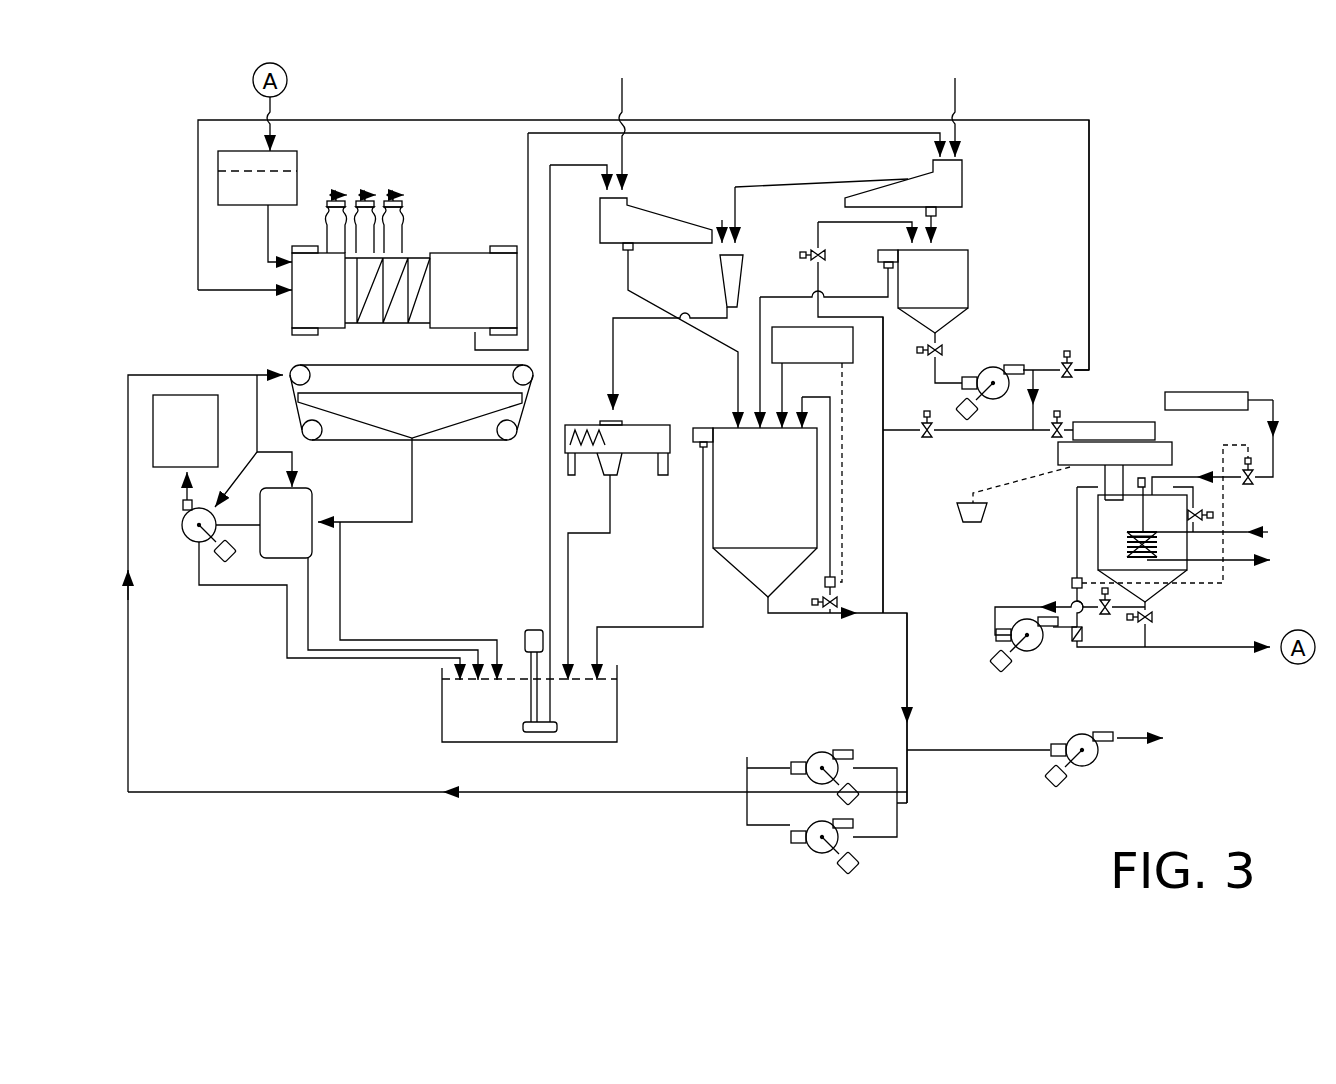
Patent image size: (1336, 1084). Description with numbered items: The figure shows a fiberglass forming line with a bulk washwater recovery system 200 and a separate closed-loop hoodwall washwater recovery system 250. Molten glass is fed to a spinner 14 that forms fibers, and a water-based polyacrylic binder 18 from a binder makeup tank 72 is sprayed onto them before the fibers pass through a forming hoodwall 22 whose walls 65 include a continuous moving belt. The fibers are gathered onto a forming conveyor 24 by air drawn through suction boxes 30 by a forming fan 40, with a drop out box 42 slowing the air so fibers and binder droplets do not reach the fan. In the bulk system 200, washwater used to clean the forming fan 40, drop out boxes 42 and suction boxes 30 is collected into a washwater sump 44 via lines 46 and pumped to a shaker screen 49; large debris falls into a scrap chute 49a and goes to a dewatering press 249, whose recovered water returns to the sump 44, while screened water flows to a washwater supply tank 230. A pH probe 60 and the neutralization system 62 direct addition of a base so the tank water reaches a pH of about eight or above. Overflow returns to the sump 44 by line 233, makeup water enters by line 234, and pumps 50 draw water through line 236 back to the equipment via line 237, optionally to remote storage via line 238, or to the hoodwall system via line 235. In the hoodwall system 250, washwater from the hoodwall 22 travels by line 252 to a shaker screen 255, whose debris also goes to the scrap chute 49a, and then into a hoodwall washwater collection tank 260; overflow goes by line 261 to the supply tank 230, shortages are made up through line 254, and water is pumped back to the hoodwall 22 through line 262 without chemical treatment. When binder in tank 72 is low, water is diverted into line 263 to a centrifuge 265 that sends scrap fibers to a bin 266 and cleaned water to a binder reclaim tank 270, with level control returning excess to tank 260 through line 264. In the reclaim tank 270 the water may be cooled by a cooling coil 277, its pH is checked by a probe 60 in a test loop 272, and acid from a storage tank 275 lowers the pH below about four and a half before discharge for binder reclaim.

The spinner 14 is at (405, 213).
The water-based polyacrylic binder 18 is at (237, 183).
The forming hoodwall 22 is at (312, 300).
The forming conveyor 24 is at (412, 363).
The suction boxes 30 is at (452, 415).
The forming fan 40 is at (188, 540).
The drop out box 42 is at (300, 508).
The washwater sump 44 is at (452, 710).
The input lines 46 is at (285, 625).
The shaker screen 49 is at (640, 205).
The scrap chute 49a is at (718, 283).
The pumps 50 is at (803, 837).
The pH probe 60 is at (825, 582).
The neutralization system 62 is at (797, 357).
The walls of the hoodwall 65 is at (515, 300).
The binder makeup tank 72 is at (297, 175).
The bulk washwater recovery system 200 is at (267, 832).
The washwater supply tank 230 is at (745, 502).
The overflow line 233 is at (702, 567).
The replenishment line 234 is at (612, 100).
The replenishment line 235 is at (883, 560).
The supply line 236 is at (907, 692).
The return line 237 is at (130, 715).
The storage line 238 is at (1023, 747).
The dewatering press 249 is at (640, 425).
The hoodwall washwater recovery system 250 is at (1160, 190).
The hoodwall washwater line 252 is at (775, 133).
The external water line 254 is at (955, 98).
The shaker screen 255 is at (962, 185).
The hoodwall washwater collection tank 260 is at (968, 265).
The overflow line 261 is at (773, 297).
The hoodwall return line 262 is at (1089, 288).
The diversion line 263 is at (1070, 388).
The return line 264 is at (978, 432).
The centrifuge 265 is at (1128, 420).
The bin 266 is at (960, 498).
The binder reclaim tank 270 is at (1187, 570).
The test loop 272 is at (1000, 622).
The acid solution storage tank 275 is at (1235, 390).
The cooling coil 277 is at (1147, 533).